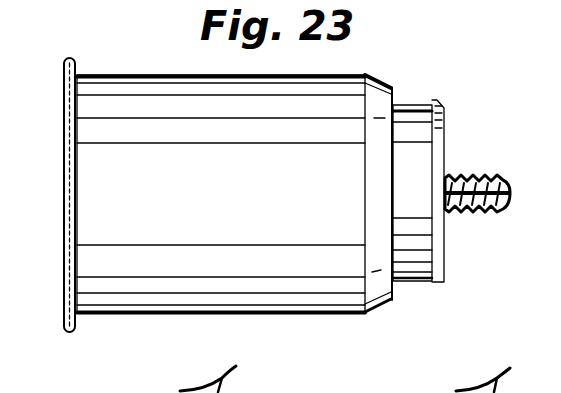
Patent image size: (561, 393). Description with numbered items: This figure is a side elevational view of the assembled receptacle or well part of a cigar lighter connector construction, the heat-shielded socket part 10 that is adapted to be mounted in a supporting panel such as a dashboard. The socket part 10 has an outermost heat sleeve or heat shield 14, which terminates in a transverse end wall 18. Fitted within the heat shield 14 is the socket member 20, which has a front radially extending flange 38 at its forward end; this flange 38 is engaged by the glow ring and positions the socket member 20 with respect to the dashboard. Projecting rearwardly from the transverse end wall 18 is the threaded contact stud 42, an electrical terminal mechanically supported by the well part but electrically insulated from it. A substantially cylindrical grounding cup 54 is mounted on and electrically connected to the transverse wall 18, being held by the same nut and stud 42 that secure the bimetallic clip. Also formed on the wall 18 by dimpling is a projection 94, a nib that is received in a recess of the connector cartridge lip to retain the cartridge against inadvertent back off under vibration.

The socket part 10 is at (343, 327).
The heat shield 14 is at (147, 297).
The transverse end wall 18 is at (384, 153).
The socket member 20 is at (66, 176).
The front radially extending flange 38 is at (64, 68).
The threaded contact stud 42 is at (478, 175).
The grounding cup 54 is at (420, 112).
The projection 94 is at (396, 206).